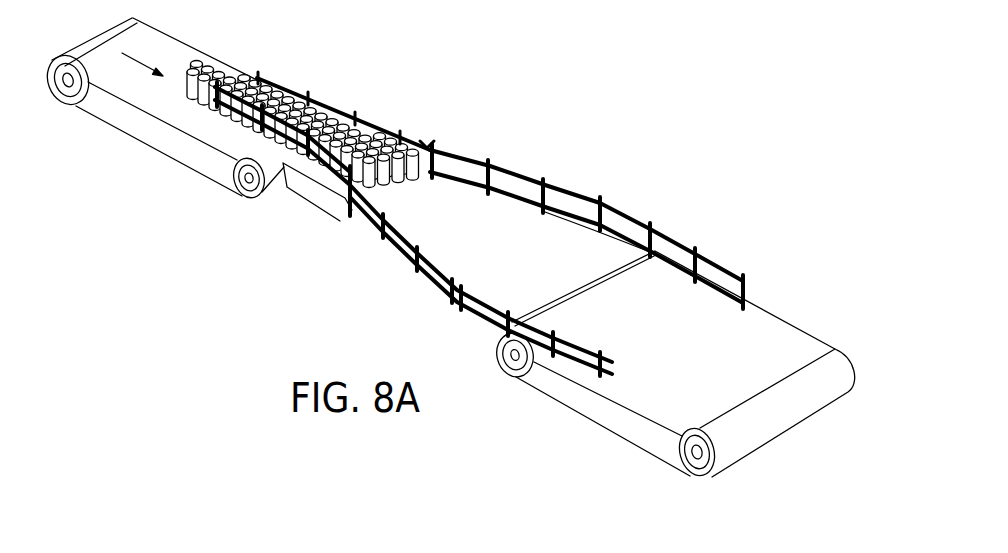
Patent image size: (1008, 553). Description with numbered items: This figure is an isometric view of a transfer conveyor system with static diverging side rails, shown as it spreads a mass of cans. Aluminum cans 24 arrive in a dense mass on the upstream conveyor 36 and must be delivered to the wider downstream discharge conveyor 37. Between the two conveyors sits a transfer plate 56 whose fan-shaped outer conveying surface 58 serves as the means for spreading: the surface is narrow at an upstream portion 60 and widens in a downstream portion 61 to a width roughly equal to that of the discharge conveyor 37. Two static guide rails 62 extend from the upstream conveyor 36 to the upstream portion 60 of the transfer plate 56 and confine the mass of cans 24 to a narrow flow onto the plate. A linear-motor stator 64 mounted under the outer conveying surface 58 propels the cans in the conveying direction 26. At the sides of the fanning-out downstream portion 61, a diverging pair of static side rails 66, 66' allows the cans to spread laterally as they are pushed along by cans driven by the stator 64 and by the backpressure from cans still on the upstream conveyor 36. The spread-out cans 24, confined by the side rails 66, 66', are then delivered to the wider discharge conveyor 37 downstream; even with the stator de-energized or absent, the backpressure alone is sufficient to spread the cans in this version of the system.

The aluminum cans 24 is at (322, 113).
The conveying direction 26 is at (142, 60).
The upstream conveyor 36 is at (166, 117).
The downstream discharge conveyor 37 is at (795, 338).
The transfer plate 56 is at (560, 207).
The fan-shaped outer conveying surface 58 is at (472, 190).
The upstream portion 60 is at (342, 202).
The downstream portion 61 is at (437, 280).
The static guide rails 62 is at (292, 95).
The linear-motor stator 64 is at (302, 200).
The static side rail 66 is at (489, 295).
The static side rail 66' is at (587, 226).